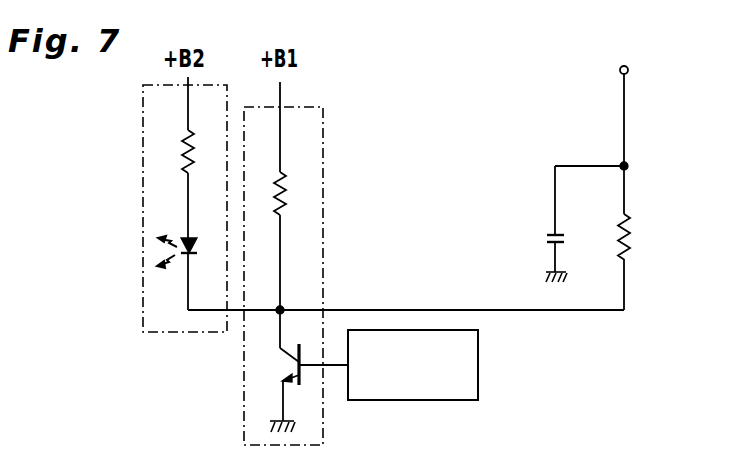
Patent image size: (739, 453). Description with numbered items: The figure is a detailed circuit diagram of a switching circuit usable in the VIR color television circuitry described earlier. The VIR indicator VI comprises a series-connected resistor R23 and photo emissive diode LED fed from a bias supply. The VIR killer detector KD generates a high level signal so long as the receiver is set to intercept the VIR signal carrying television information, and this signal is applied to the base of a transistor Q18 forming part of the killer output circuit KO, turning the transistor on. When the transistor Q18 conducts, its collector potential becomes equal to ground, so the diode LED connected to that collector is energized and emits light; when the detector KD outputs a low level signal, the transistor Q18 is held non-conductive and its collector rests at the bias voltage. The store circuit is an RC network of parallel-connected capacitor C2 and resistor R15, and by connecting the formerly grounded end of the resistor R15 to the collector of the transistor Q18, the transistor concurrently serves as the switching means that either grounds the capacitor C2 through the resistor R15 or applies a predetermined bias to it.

The VIR indicator VI is at (143, 332).
The resistor R23 is at (185, 153).
The photo emissive diode LED is at (126, 275).
The killer output circuit KO is at (323, 110).
The transistor Q18 is at (277, 365).
The VIR killer detector KD is at (478, 365).
The capacitor C2 is at (572, 224).
The resistor R15 is at (631, 228).